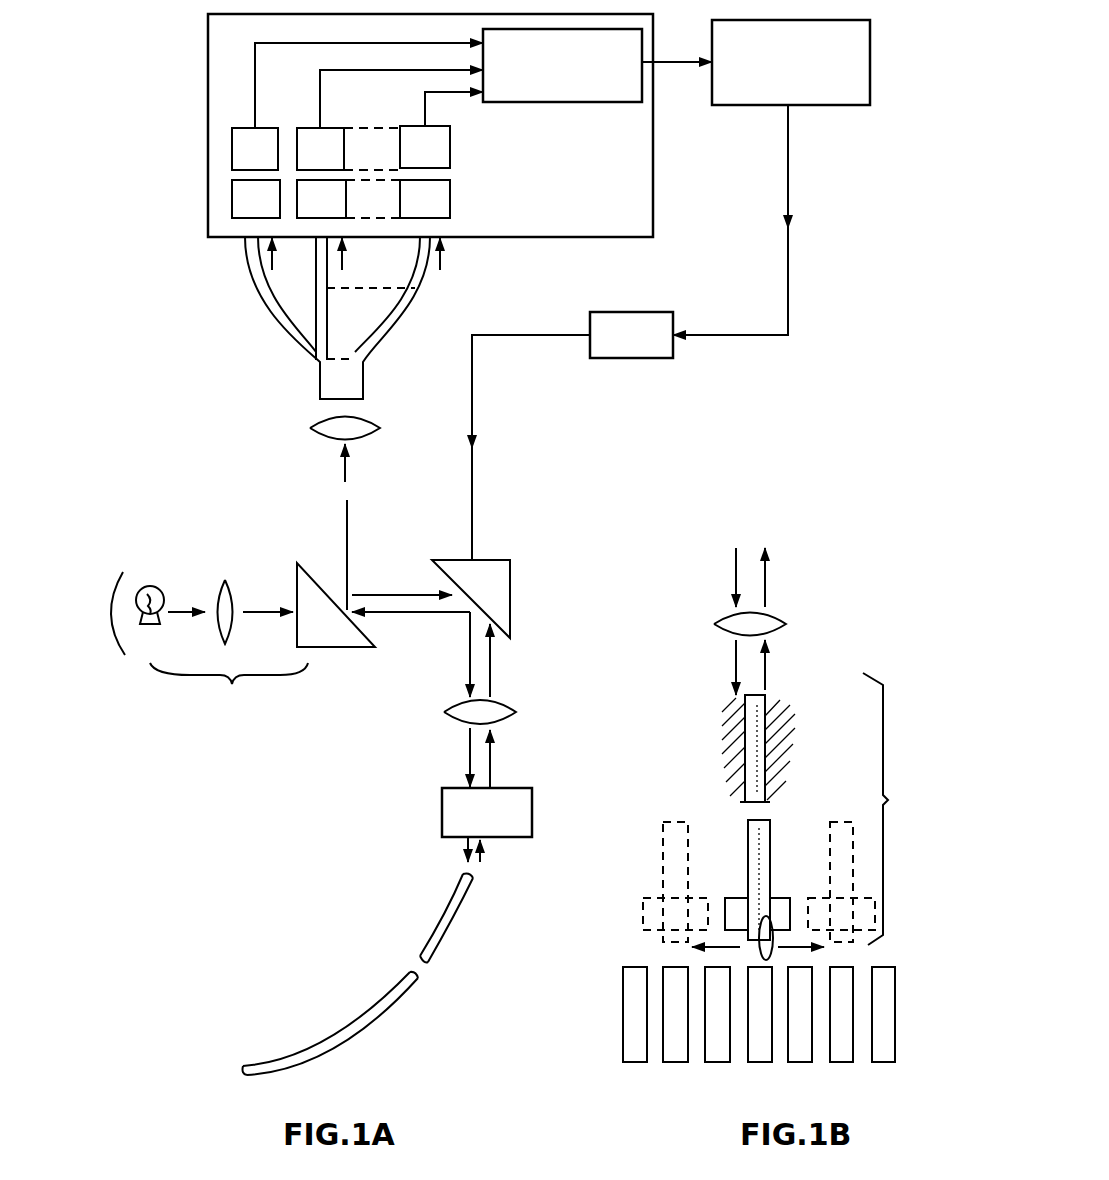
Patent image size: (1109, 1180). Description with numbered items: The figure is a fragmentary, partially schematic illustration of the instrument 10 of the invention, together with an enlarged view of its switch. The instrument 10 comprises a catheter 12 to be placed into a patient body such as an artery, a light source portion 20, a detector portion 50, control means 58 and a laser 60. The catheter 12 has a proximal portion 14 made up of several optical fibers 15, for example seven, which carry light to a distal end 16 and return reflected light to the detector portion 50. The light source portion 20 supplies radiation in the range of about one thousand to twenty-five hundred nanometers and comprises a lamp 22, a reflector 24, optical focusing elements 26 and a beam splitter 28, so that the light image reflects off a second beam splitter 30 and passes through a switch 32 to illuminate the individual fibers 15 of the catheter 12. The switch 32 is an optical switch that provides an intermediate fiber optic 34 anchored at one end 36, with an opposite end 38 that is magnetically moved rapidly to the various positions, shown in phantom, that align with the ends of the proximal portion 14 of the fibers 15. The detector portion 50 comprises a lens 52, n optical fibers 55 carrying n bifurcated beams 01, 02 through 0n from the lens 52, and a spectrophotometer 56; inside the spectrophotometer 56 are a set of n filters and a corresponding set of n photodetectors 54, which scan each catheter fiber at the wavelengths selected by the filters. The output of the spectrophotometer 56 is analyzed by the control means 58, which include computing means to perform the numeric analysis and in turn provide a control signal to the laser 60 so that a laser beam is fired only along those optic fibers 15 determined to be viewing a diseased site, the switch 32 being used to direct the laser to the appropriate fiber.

In FIG. 1A, the instrument 10 is at (165, 328).
In FIG. 1A, the catheter 12 is at (346, 1013).
In FIG. 1A, the proximal portion 14 is at (460, 880).
In FIG. 1B, the proximal portion 14 is at (900, 987).
In FIG. 1B, the optical fibers 15 is at (672, 1025).
In FIG. 1A, the distal end 16 is at (262, 1066).
In FIG. 1A, the light source portion 20 is at (229, 692).
In FIG. 1A, the lamp 22 is at (150, 585).
In FIG. 1A, the reflector 24 is at (128, 648).
In FIG. 1A, the optical focusing elements 26 is at (218, 585).
In FIG. 1A, the beam splitter 28 is at (320, 585).
In FIG. 1A, the second beam splitter 30 is at (456, 560).
In FIG. 1A, the switch 32 is at (445, 788).
In FIG. 1B, the switch 32 is at (819, 746).
In FIG. 1B, the intermediate fiber optic 34 is at (742, 796).
In FIG. 1B, the anchored end 36 is at (762, 692).
In FIG. 1B, the opposite end 38 is at (768, 915).
In FIG. 1A, the detector portion 50 is at (282, 417).
In FIG. 1A, the lens 52 is at (372, 437).
In FIG. 1A, the photodetectors 54 is at (205, 140).
In FIG. 1A, the optical fibers 55 is at (308, 352).
In FIG. 1A, the spectrophotometer 56 is at (653, 195).
In FIG. 1A, the control means 58 is at (812, 105).
In FIG. 1A, the laser 60 is at (650, 310).
In FIG. 1A, the bifurcated beam 01 is at (265, 290).
In FIG. 1A, the bifurcated beam 02 is at (327, 298).
In FIG. 1A, the bifurcated beam 0n is at (410, 298).